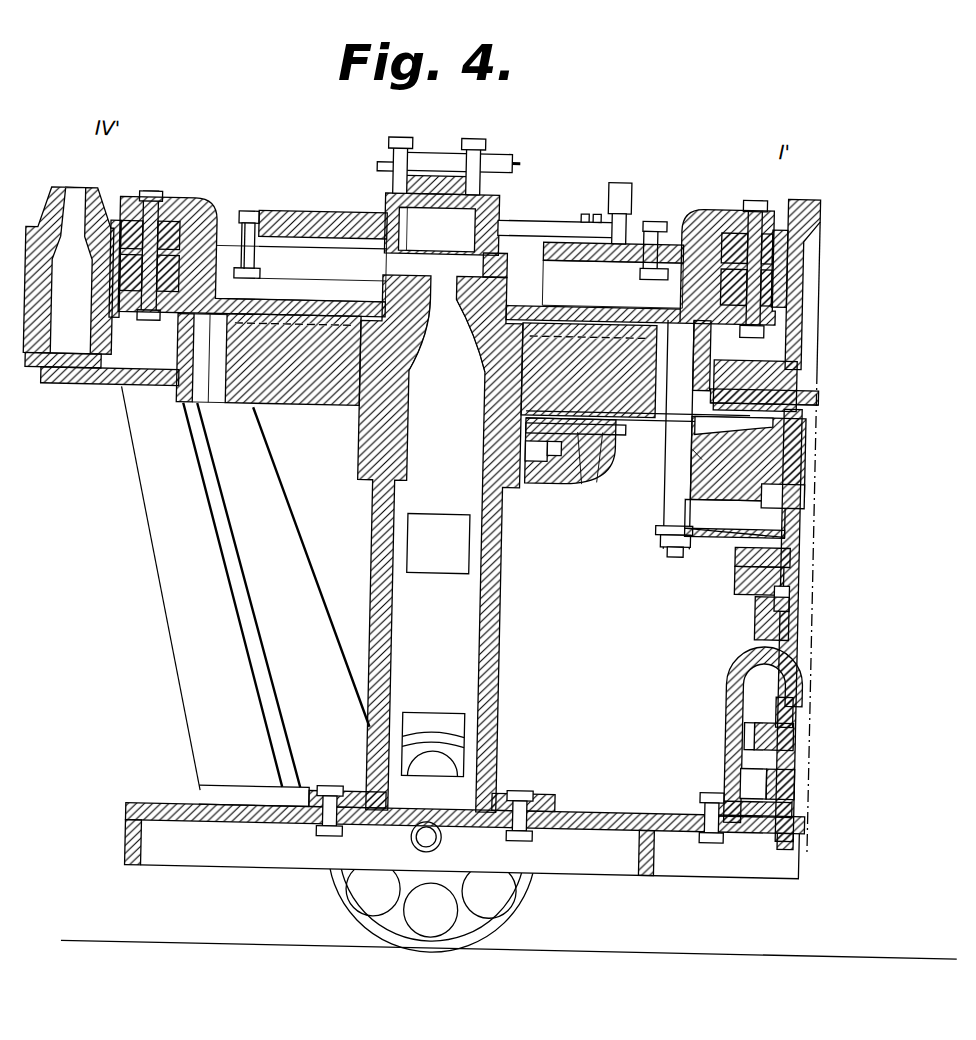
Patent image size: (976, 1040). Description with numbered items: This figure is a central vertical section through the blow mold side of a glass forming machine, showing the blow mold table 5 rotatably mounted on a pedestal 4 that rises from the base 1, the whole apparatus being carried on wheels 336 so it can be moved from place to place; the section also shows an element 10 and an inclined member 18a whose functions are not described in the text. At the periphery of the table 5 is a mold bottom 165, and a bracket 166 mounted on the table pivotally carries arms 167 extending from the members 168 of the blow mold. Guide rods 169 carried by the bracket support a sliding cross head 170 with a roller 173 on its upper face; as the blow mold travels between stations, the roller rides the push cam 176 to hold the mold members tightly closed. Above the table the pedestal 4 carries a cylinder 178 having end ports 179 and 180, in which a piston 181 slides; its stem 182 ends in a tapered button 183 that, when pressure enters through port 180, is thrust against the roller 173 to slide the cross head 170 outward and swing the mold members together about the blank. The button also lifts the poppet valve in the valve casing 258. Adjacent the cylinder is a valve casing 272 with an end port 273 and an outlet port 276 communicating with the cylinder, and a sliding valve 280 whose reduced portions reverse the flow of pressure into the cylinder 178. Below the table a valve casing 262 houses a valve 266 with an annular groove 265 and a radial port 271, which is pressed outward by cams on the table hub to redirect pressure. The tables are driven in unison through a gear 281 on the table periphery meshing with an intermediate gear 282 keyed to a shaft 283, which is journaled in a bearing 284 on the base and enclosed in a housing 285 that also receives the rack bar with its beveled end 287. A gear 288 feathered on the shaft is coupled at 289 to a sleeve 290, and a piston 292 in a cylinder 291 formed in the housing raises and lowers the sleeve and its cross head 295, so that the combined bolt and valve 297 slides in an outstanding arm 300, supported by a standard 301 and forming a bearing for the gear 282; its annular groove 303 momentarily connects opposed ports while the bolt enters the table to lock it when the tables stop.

The base 1 is at (745, 870).
The pedestal 4 is at (505, 654).
The blow mold table 5 is at (310, 410).
The bracket bolt 10 is at (523, 413).
The inclined strut 18a is at (162, 520).
The mold bottom 165 is at (72, 386).
The bracket 166 is at (208, 214).
The arm 167 is at (109, 230).
The blow mold member 168 is at (76, 196).
The guide rod 169 is at (449, 271).
The cross head 170 is at (290, 215).
The roller 173 is at (242, 216).
The push cam 176 is at (256, 220).
The cylinder 178 is at (437, 262).
The end port 179 is at (542, 220).
The end port 180 is at (380, 206).
The piston 181 is at (480, 262).
The stem 182 is at (586, 212).
The tapered button 183 is at (618, 216).
The valve casing 258 is at (616, 182).
The valve casing 262 is at (597, 470).
The annular groove 265 is at (580, 483).
The valve 266 is at (560, 482).
The radial port 271 is at (418, 229).
The valve casing 272 is at (398, 160).
The end port 273 is at (500, 178).
The outlet port 276 is at (369, 169).
The valve 280 is at (463, 160).
The gear 281 is at (698, 385).
The intermediate gear 282 is at (795, 390).
The shaft 283 is at (777, 592).
The bearing 284 is at (760, 775).
The housing 285 is at (742, 654).
The beveled end 287 is at (175, 408).
The gear 288 is at (750, 730).
The coupling 289 is at (790, 712).
The sleeve 290 is at (798, 680).
The cylinder 291 is at (736, 580).
The piston 292 is at (770, 620).
The cross head 295 is at (760, 490).
The combined bolt and valve 297 is at (662, 520).
The outstanding arm 300 is at (723, 486).
The standard 301 is at (736, 548).
The annular groove 303 is at (663, 470).
The wheel 336 is at (522, 900).